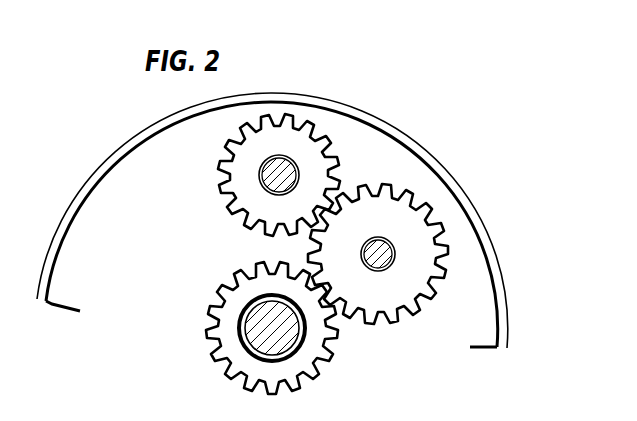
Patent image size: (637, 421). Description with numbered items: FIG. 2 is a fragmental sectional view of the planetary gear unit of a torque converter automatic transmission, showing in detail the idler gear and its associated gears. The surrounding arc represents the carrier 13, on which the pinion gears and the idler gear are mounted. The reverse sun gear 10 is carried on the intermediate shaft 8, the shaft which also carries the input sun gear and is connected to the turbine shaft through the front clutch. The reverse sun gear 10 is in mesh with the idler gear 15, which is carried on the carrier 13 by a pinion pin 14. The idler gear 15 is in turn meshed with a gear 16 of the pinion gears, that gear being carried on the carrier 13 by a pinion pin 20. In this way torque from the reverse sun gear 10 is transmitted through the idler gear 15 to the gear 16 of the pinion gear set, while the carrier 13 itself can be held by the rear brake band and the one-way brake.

The intermediate shaft 8 is at (250, 316).
The reverse sun gear 10 is at (216, 343).
The carrier 13 is at (372, 118).
The pinion pin 14 is at (388, 261).
The idler gear 15 is at (398, 305).
The gear of the pinion gears 16 is at (232, 196).
The pinion pin 20 is at (262, 166).